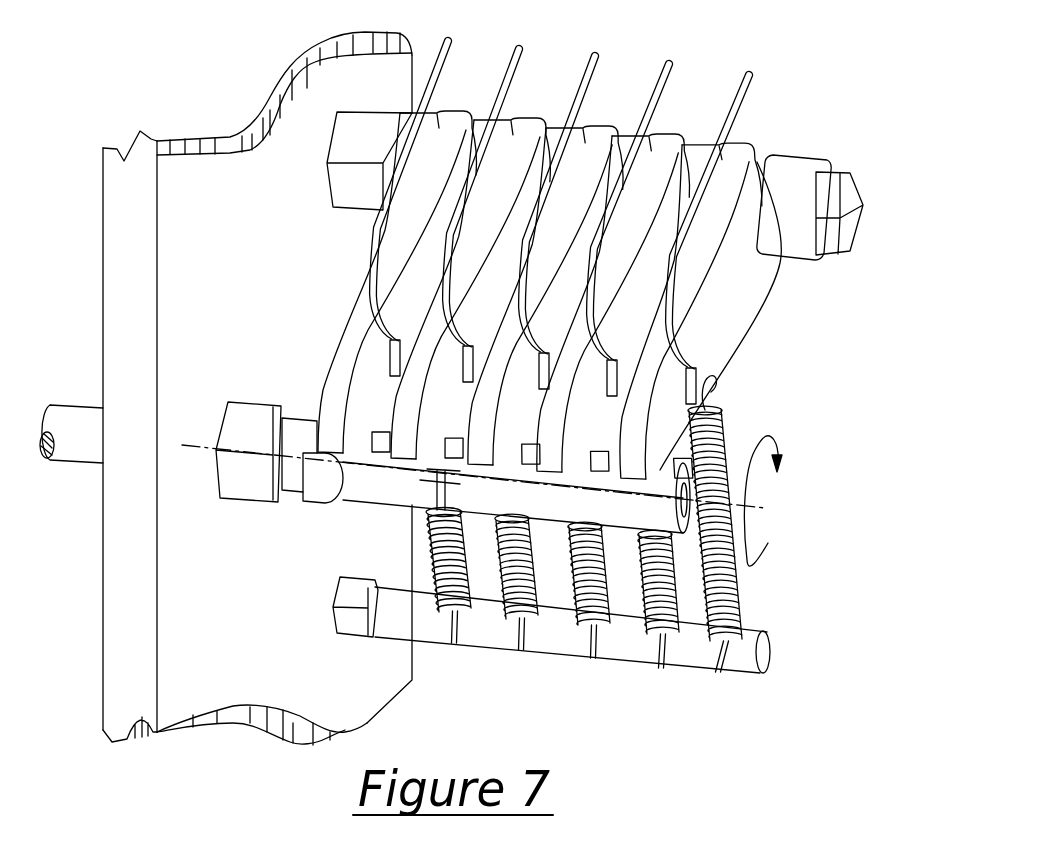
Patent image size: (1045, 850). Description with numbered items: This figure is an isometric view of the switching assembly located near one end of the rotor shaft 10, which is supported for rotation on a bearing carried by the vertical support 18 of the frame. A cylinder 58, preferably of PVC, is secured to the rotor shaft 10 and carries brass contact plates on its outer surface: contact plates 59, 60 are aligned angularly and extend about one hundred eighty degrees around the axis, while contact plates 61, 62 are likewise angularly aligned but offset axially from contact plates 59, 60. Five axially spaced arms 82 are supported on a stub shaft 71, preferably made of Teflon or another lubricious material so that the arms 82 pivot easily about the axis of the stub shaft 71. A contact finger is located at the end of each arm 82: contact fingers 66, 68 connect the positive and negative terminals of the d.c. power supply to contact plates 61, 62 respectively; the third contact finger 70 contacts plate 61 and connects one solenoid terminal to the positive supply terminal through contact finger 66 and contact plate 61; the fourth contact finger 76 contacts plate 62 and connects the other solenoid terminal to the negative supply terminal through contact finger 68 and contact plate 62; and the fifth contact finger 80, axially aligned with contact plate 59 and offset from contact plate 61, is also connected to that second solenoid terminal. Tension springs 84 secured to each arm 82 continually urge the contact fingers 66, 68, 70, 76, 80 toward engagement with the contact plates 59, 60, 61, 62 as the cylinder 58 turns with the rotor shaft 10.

The rotor shaft 10 is at (67, 405).
The vertical support 18 is at (251, 285).
The cylinder 58 is at (620, 520).
The contact plate 59 is at (482, 502).
The contact plate 60 is at (312, 487).
The contact plate 61 is at (710, 382).
The contact plate 62 is at (443, 470).
The contact finger 66 is at (527, 493).
The contact finger 68 is at (390, 473).
The third contact finger 70 is at (425, 484).
The stub shaft 71 is at (798, 167).
The fourth contact finger 76 is at (337, 487).
The fifth contact finger 80 is at (697, 500).
The arm 82 is at (437, 302).
The tension spring 84 is at (720, 437).